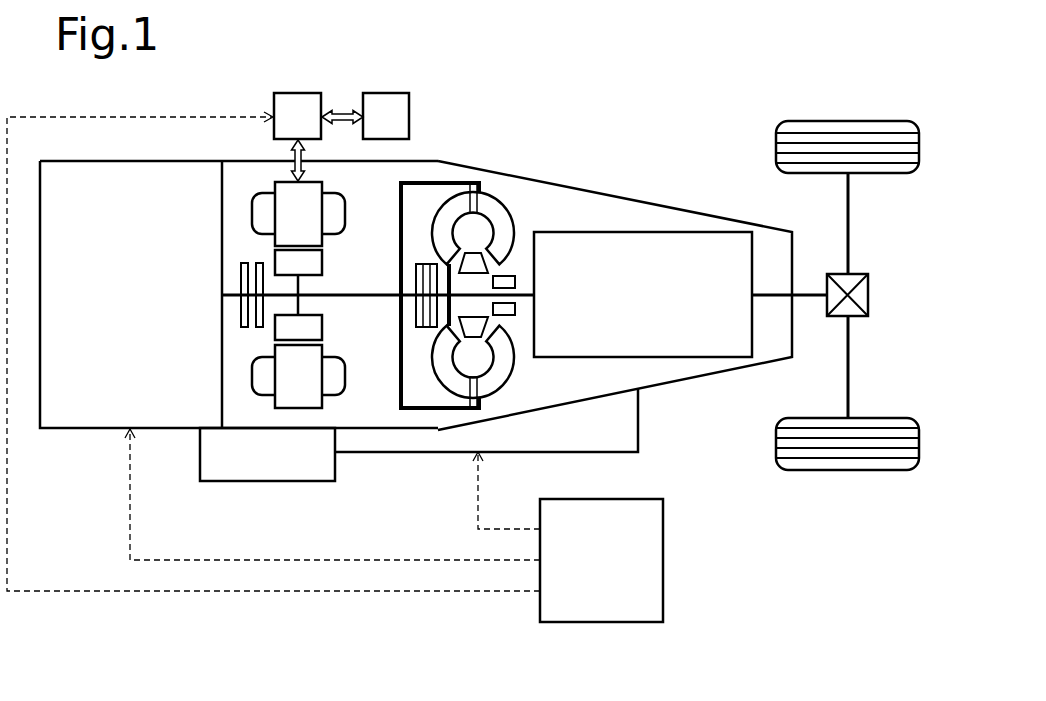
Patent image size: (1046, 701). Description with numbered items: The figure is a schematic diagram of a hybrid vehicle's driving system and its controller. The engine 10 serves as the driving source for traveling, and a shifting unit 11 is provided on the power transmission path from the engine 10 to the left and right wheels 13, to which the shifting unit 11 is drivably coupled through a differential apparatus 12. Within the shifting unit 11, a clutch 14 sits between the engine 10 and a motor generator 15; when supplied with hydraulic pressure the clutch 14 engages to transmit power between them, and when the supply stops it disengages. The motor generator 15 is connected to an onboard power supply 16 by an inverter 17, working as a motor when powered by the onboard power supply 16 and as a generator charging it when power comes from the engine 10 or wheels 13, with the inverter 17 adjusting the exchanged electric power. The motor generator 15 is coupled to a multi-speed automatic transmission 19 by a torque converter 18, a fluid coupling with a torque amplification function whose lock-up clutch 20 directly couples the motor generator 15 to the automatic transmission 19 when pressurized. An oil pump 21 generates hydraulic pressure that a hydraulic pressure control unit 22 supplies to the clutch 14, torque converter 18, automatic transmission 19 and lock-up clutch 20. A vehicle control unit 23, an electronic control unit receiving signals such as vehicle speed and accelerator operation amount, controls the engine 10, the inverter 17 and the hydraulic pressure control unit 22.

The engine 10 is at (80, 430).
The shifting unit 11 is at (692, 378).
The differential apparatus 12 is at (858, 273).
The wheels 13 is at (885, 173).
The clutch 14 is at (240, 310).
The motor generator 15 is at (345, 212).
The onboard power supply 16 is at (409, 115).
The inverter 17 is at (274, 128).
The torque converter 18 is at (510, 205).
The automatic transmission 19 is at (575, 357).
The lock-up clutch 20 is at (416, 283).
The oil pump 21 is at (268, 482).
The hydraulic pressure control unit 22 is at (398, 455).
The vehicle control unit 23 is at (663, 518).